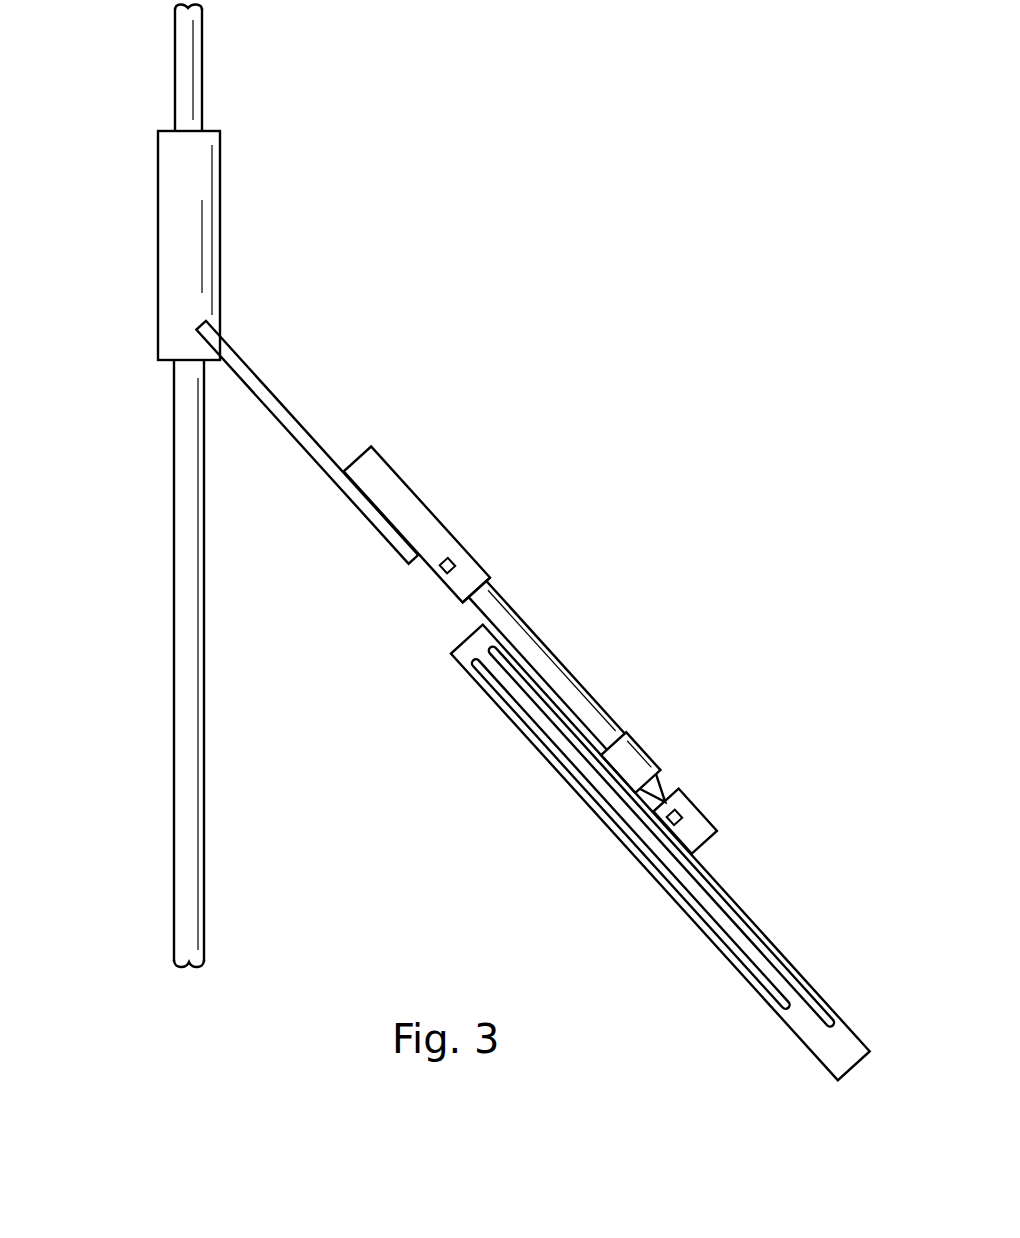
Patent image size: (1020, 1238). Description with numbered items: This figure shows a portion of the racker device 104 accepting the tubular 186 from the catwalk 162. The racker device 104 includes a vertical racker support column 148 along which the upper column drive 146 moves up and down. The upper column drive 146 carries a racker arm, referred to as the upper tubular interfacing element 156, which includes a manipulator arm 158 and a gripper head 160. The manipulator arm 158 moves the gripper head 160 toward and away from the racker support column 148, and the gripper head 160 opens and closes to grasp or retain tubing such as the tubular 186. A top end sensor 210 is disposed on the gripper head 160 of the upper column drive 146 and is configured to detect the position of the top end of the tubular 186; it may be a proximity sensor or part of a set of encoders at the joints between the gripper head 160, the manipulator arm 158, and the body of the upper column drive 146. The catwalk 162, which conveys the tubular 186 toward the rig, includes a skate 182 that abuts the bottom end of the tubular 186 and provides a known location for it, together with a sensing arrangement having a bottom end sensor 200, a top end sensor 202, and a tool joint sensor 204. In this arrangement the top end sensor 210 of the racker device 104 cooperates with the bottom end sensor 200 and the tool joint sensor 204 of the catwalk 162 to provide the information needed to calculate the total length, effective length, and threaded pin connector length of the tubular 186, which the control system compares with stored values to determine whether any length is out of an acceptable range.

The racker device 104 is at (133, 485).
The upper column drive 146 is at (157, 245).
The racker support column 148 is at (175, 66).
The upper tubular interfacing element 156 is at (433, 530).
The manipulator arm 158 is at (279, 397).
The gripper head 160 is at (477, 558).
The catwalk 162 is at (658, 853).
The skate 182 is at (726, 804).
The tubular 186 is at (575, 672).
The bottom end sensor 200 is at (765, 940).
The top end sensor 202 is at (495, 697).
The tool joint sensor 204 is at (690, 798).
The top end sensor 210 is at (437, 573).